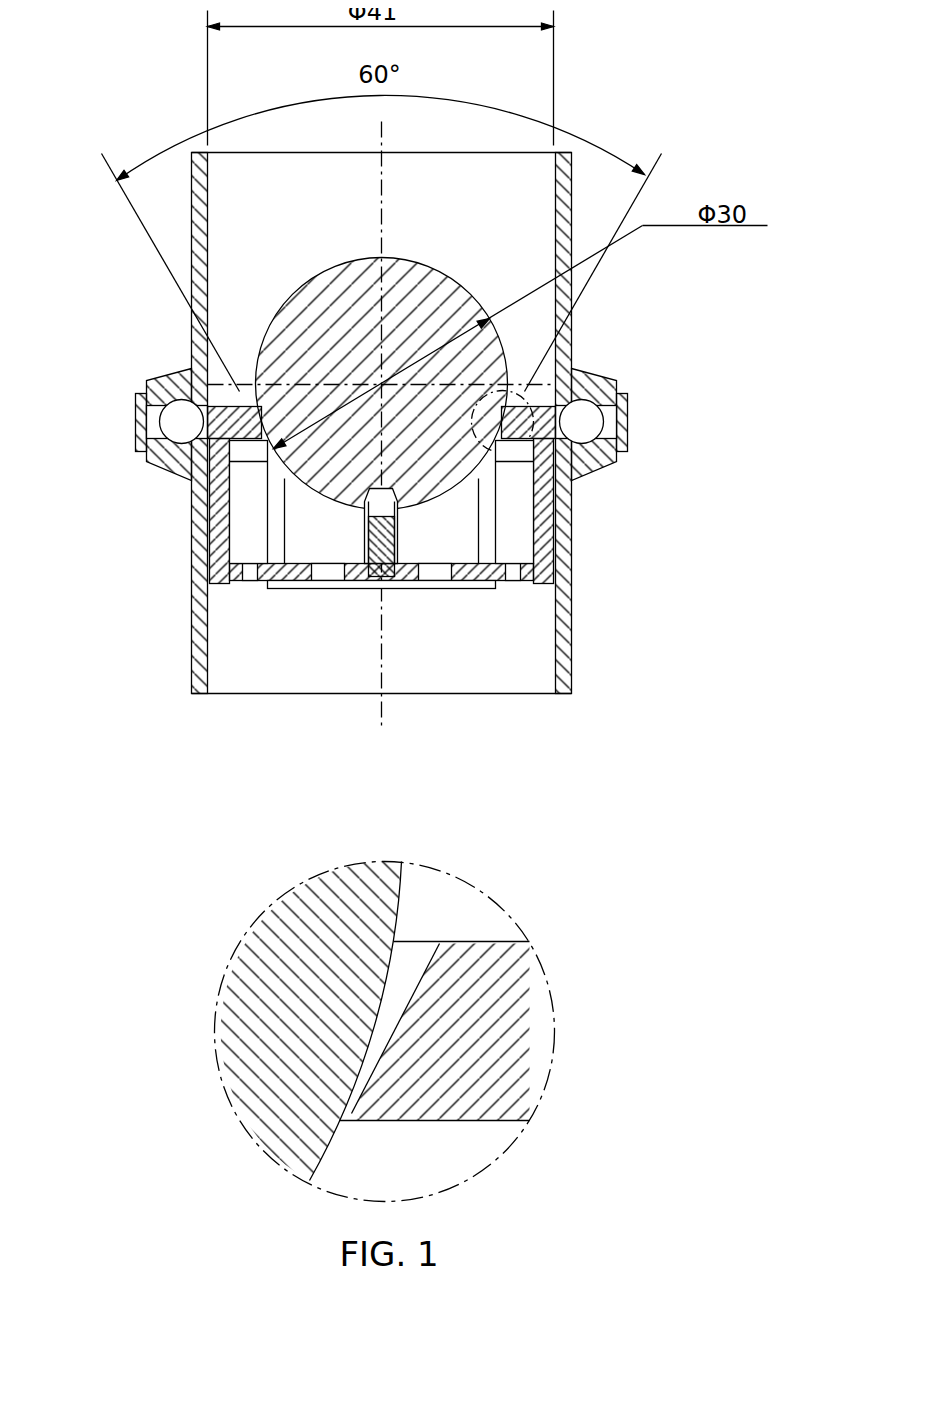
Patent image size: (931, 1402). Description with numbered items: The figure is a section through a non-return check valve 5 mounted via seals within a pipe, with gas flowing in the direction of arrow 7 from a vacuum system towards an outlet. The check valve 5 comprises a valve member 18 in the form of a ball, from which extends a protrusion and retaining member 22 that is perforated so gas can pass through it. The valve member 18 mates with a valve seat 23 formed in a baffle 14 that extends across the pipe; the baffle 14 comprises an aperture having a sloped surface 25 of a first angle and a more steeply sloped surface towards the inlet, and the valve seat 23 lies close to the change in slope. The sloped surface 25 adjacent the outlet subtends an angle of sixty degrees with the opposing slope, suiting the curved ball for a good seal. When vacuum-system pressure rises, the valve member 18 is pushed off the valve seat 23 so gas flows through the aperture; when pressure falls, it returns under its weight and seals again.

The check valve 5 is at (312, 626).
The arrow 7 is at (487, 718).
The baffle 14 is at (502, 1002).
The valve member 18 is at (323, 462).
The retaining member 22 is at (275, 590).
The valve seat 23 is at (363, 1040).
The sloped surface 25 is at (413, 970).